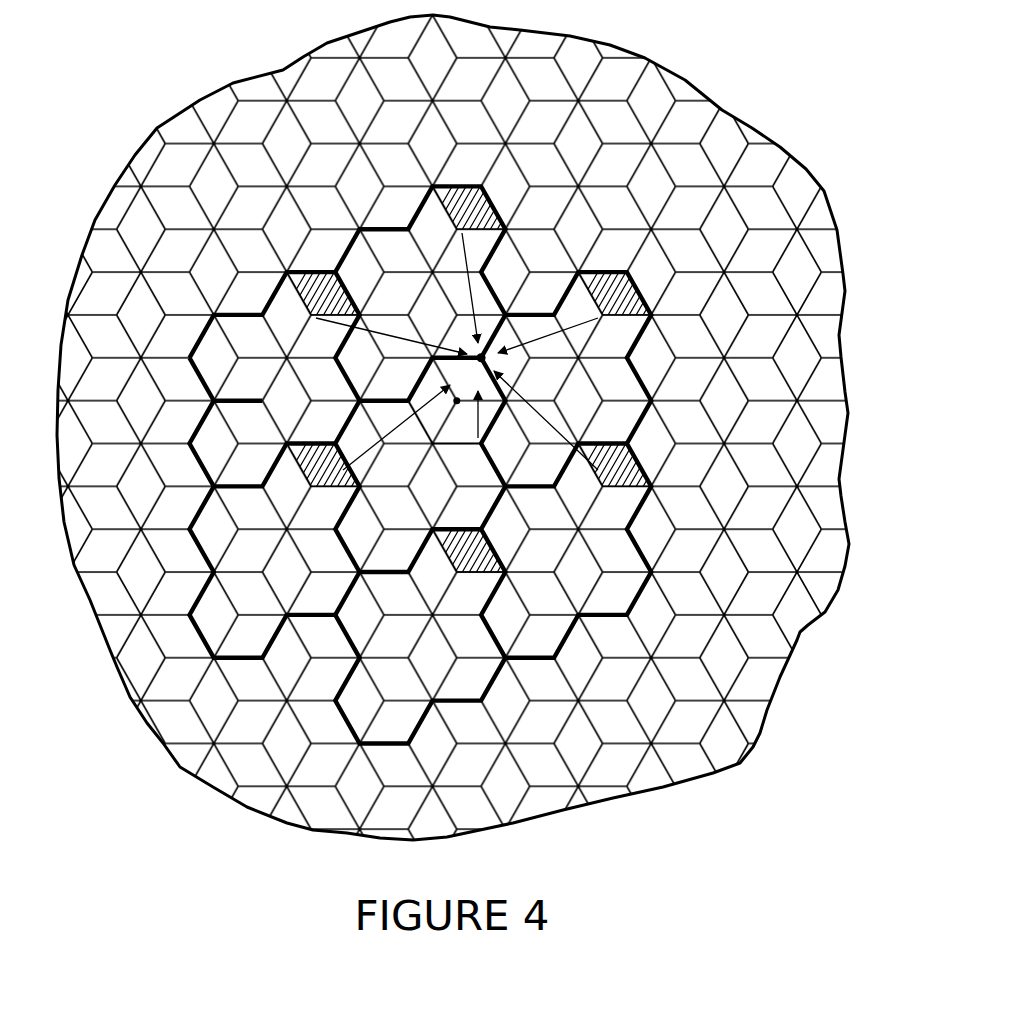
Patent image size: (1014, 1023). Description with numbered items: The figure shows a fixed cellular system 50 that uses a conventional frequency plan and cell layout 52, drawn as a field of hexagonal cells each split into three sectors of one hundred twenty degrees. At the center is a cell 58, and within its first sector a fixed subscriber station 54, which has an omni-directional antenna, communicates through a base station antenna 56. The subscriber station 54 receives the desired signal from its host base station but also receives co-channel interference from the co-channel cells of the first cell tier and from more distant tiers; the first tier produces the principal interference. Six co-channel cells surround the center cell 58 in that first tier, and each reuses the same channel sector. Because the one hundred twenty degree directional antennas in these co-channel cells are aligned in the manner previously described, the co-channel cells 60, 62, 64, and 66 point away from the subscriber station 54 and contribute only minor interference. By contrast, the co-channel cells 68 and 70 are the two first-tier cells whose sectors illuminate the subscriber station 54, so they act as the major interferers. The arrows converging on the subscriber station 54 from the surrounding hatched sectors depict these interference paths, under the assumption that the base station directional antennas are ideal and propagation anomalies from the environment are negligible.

The fixed cellular system 50 is at (723, 35).
The cell layout 52 is at (783, 142).
The fixed subscriber station 54 is at (489, 353).
The base station antenna 56 is at (458, 404).
The cell 58 is at (430, 389).
The co-channel cell 60 is at (288, 304).
The co-channel cell 62 is at (428, 221).
The co-channel cell 64 is at (617, 328).
The co-channel cell 66 is at (611, 508).
The co-channel cell 68 is at (289, 489).
The co-channel cell 70 is at (467, 600).